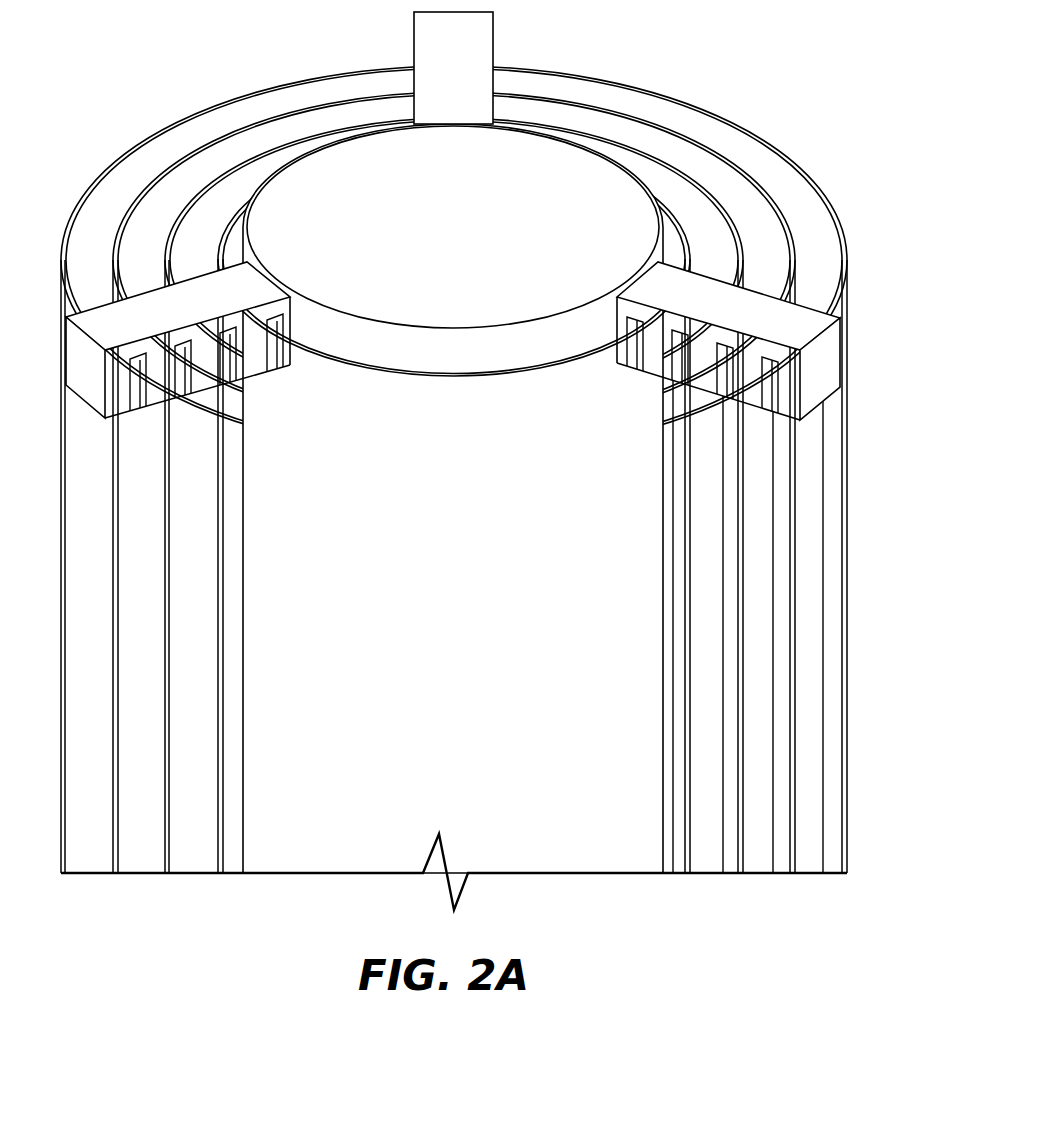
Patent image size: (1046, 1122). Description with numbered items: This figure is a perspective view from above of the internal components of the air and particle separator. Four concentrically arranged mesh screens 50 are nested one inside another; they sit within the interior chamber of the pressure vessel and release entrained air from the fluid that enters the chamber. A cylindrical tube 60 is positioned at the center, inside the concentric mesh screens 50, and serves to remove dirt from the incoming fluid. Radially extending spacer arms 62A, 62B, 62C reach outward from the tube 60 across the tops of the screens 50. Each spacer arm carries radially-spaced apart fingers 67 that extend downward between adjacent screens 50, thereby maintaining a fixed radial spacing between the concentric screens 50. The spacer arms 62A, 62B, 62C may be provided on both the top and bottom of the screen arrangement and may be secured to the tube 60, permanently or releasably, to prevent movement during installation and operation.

The mesh screens 50 is at (496, 488).
The cylindrical tube 60 is at (585, 150).
The spacer arm 62A is at (712, 305).
The spacer arm 62B is at (481, 111).
The spacer arm 62C is at (264, 301).
The fingers 67 is at (745, 352).